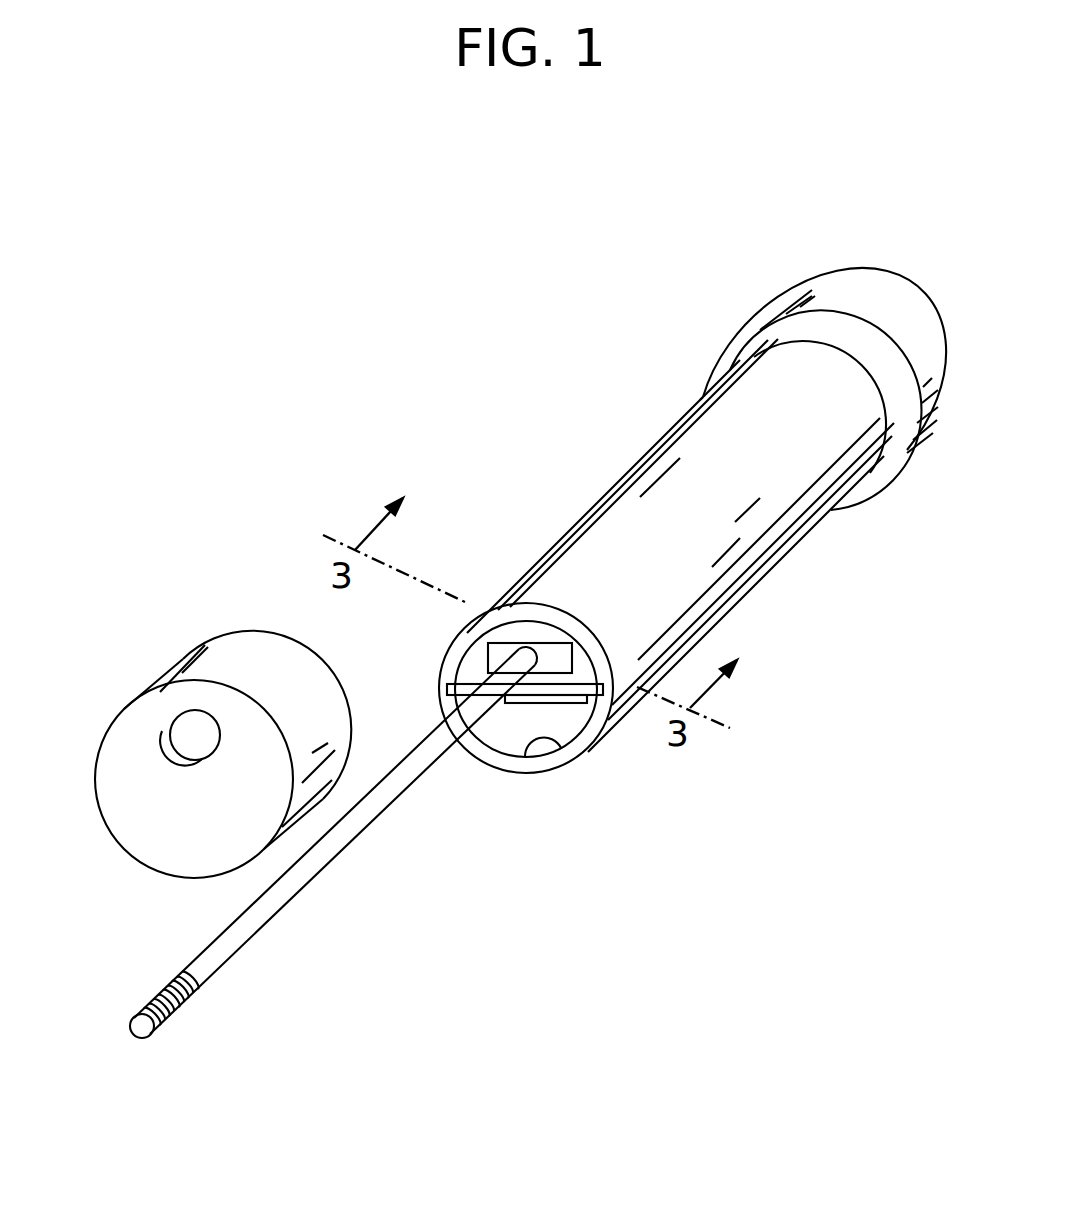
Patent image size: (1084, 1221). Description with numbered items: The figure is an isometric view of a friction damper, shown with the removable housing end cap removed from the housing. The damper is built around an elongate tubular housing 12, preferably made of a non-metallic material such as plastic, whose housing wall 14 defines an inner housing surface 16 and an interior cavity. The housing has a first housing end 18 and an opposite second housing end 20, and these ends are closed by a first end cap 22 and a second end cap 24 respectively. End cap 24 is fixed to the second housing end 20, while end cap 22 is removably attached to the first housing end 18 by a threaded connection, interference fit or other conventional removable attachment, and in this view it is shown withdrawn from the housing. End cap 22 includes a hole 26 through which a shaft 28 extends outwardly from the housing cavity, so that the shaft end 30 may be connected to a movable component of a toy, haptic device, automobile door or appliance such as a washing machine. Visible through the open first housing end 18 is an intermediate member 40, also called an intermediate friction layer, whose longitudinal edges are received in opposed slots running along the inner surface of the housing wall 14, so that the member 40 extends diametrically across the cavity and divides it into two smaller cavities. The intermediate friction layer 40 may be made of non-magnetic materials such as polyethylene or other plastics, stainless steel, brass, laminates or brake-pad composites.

The tubular housing 12 is at (780, 602).
The housing wall 14 is at (625, 510).
The inner housing surface 16 is at (562, 742).
The first housing end 18 is at (516, 592).
The second housing end 20 is at (760, 382).
The first end cap 22 is at (223, 655).
The second end cap 24 is at (830, 297).
The hole 26 is at (165, 753).
The shaft 28 is at (335, 850).
The shaft end 30 is at (180, 1003).
The intermediate member 40 is at (453, 688).